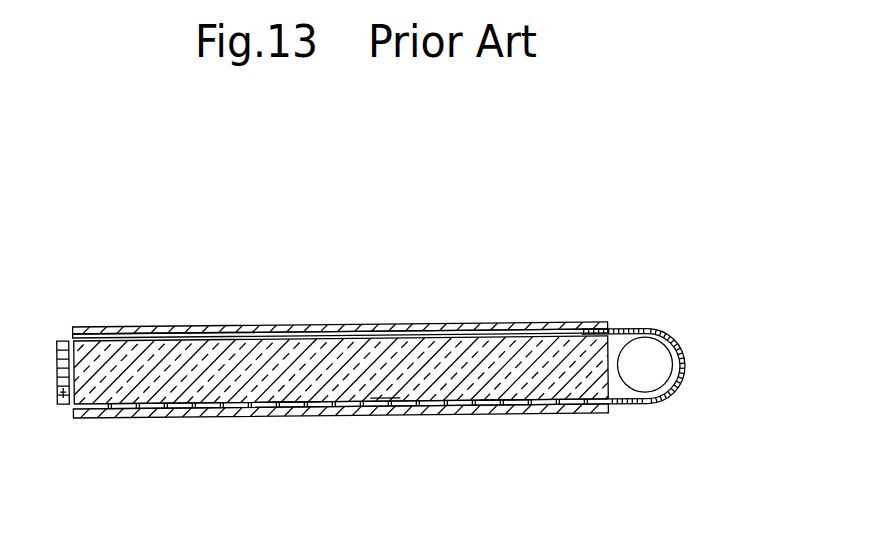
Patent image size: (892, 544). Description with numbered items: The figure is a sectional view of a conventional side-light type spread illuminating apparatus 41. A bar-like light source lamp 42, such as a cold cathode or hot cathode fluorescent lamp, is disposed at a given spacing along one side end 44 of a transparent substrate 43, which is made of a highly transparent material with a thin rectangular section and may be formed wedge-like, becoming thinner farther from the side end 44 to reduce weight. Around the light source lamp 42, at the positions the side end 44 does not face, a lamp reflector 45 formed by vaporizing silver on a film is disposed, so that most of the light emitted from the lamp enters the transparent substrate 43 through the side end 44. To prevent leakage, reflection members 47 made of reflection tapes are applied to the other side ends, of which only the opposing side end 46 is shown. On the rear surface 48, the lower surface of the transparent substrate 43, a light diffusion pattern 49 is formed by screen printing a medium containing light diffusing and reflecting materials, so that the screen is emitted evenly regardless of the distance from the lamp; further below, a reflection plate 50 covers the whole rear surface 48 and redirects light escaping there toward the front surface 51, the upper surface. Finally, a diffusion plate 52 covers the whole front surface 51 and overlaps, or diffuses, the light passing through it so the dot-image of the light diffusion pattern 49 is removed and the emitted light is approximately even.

The spread illuminating apparatus 41 is at (390, 300).
The light source lamp 42 is at (644, 387).
The transparent substrate 43 is at (284, 355).
The side end 44 is at (619, 330).
The lamp reflector 45 is at (682, 337).
The side end 46 is at (80, 352).
The reflection member 47 is at (62, 407).
The rear surface 48 is at (385, 398).
The light diffusion pattern 49 is at (287, 409).
The reflection plate 50 is at (203, 418).
The front surface 51 is at (450, 330).
The diffusion plate 52 is at (199, 328).